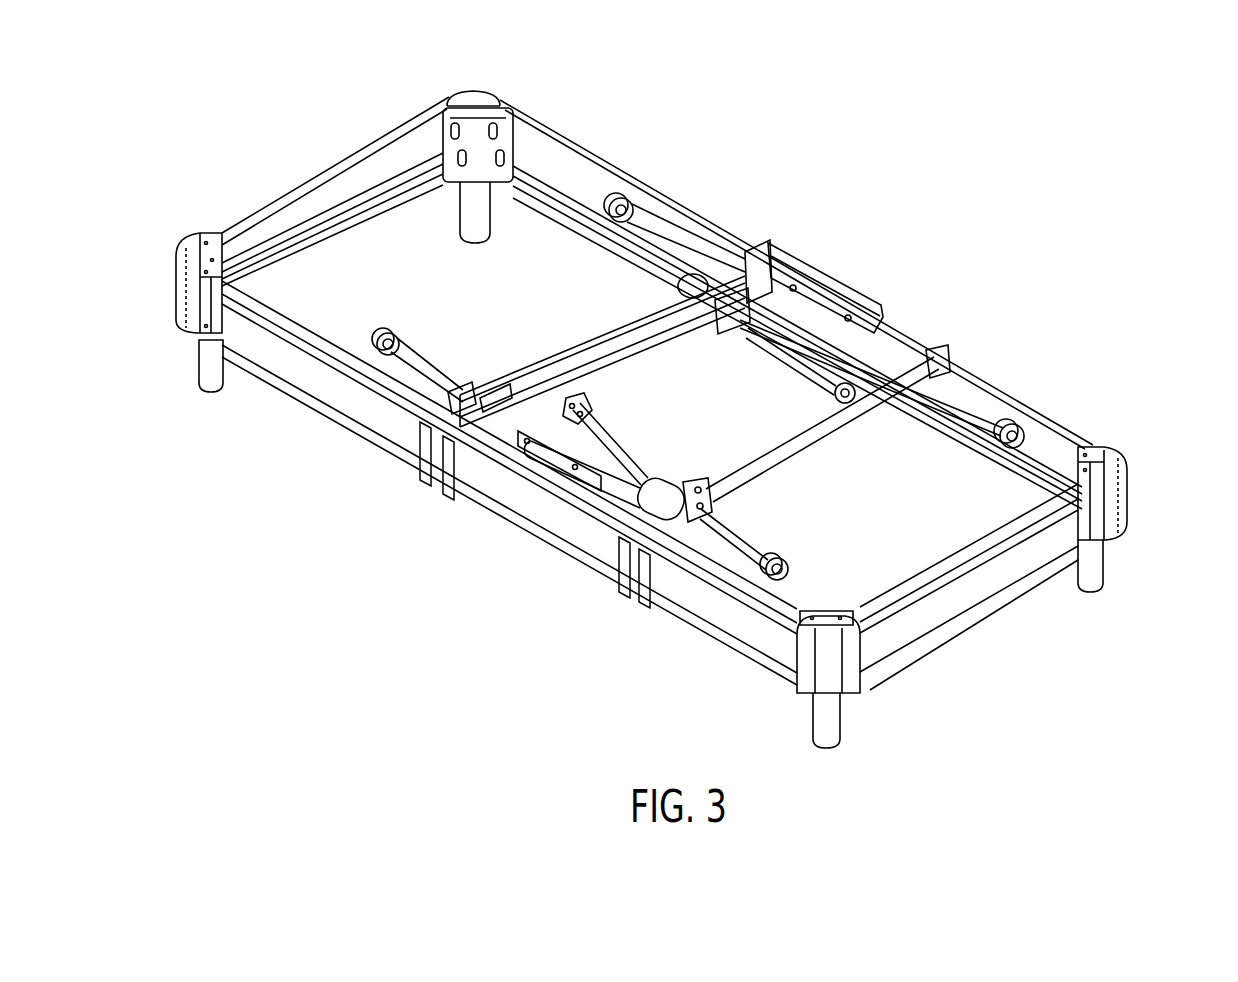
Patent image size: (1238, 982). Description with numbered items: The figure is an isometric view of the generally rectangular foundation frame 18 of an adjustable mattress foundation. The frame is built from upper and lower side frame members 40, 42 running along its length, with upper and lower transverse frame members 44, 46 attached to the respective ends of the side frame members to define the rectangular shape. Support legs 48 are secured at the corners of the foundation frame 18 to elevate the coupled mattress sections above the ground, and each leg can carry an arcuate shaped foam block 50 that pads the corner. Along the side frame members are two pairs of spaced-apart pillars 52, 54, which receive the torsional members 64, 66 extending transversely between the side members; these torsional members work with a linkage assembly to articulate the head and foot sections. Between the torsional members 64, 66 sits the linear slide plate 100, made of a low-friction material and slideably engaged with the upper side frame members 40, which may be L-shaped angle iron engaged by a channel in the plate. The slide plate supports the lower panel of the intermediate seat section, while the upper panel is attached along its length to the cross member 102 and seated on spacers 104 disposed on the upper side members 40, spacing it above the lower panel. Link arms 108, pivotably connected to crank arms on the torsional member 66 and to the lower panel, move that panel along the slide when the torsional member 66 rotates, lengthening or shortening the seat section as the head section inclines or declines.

The foundation frame 18 is at (975, 145).
The upper side frame member 40 is at (606, 160).
The lower side frame member 42 is at (582, 224).
The upper transverse frame member 44 is at (323, 172).
The lower transverse frame member 46 is at (371, 222).
The support leg 48 is at (530, 91).
The arcuate shaped foam block 50 is at (174, 283).
The pillar 52 is at (421, 455).
The pillar 54 is at (624, 573).
The torsional member 64 is at (566, 340).
The torsional member 66 is at (793, 455).
The linear slide plate 100 is at (818, 300).
The cross member 102 is at (664, 342).
The spacer 104 is at (864, 298).
The link arm 108 is at (632, 460).